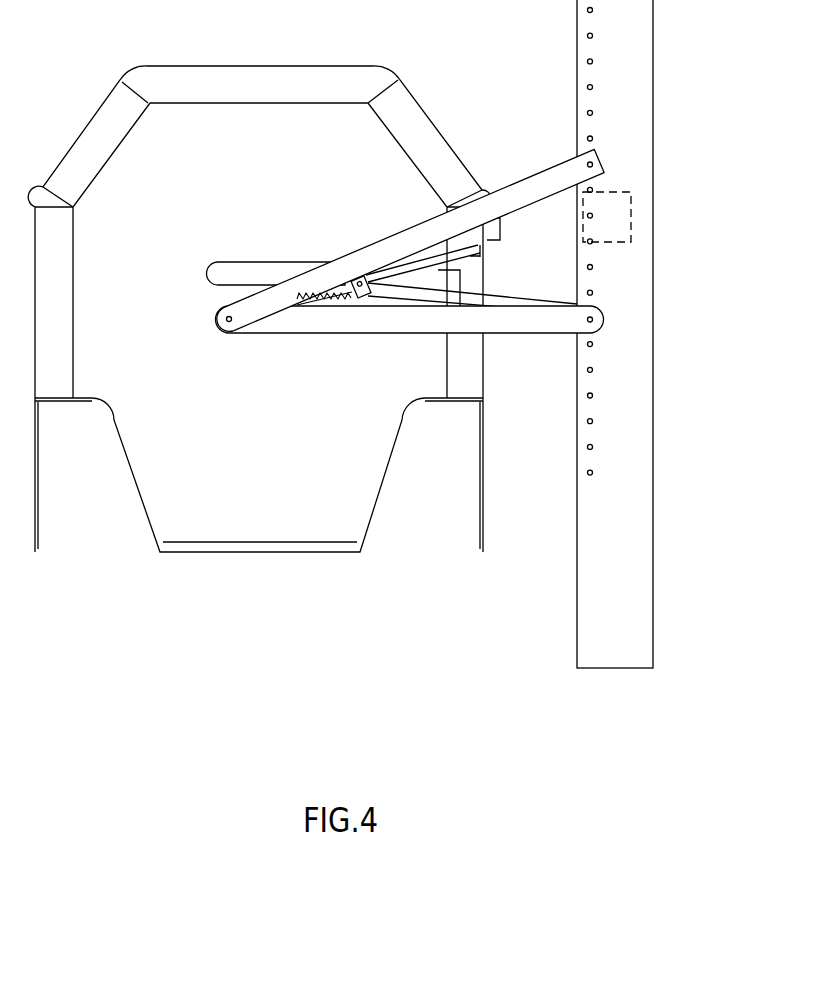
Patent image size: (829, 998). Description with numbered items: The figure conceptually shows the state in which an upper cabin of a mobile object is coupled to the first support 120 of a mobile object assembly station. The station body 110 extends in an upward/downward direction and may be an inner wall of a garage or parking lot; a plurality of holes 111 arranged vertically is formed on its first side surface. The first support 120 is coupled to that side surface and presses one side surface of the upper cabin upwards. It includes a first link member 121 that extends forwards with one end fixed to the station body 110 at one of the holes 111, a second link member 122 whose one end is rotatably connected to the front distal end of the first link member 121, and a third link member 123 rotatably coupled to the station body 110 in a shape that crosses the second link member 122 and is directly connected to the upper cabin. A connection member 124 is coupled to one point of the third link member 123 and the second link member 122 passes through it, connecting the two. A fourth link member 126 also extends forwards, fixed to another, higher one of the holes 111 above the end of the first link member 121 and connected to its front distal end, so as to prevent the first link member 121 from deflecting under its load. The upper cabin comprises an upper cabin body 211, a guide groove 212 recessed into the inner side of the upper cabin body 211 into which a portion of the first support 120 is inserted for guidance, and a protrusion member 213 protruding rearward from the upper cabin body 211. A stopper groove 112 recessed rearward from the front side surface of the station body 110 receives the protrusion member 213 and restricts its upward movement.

The station body 110 is at (650, 334).
The holes 111 is at (592, 370).
The stopper groove 112 is at (620, 223).
The first support 120 is at (475, 264).
The first link member 121 is at (278, 325).
The second link member 122 is at (484, 250).
The third link member 123 is at (510, 300).
The connection member 124 is at (362, 298).
The fourth link member 126 is at (533, 190).
The upper cabin body 211 is at (310, 120).
The guide groove 212 is at (243, 270).
The protrusion member 213 is at (503, 232).